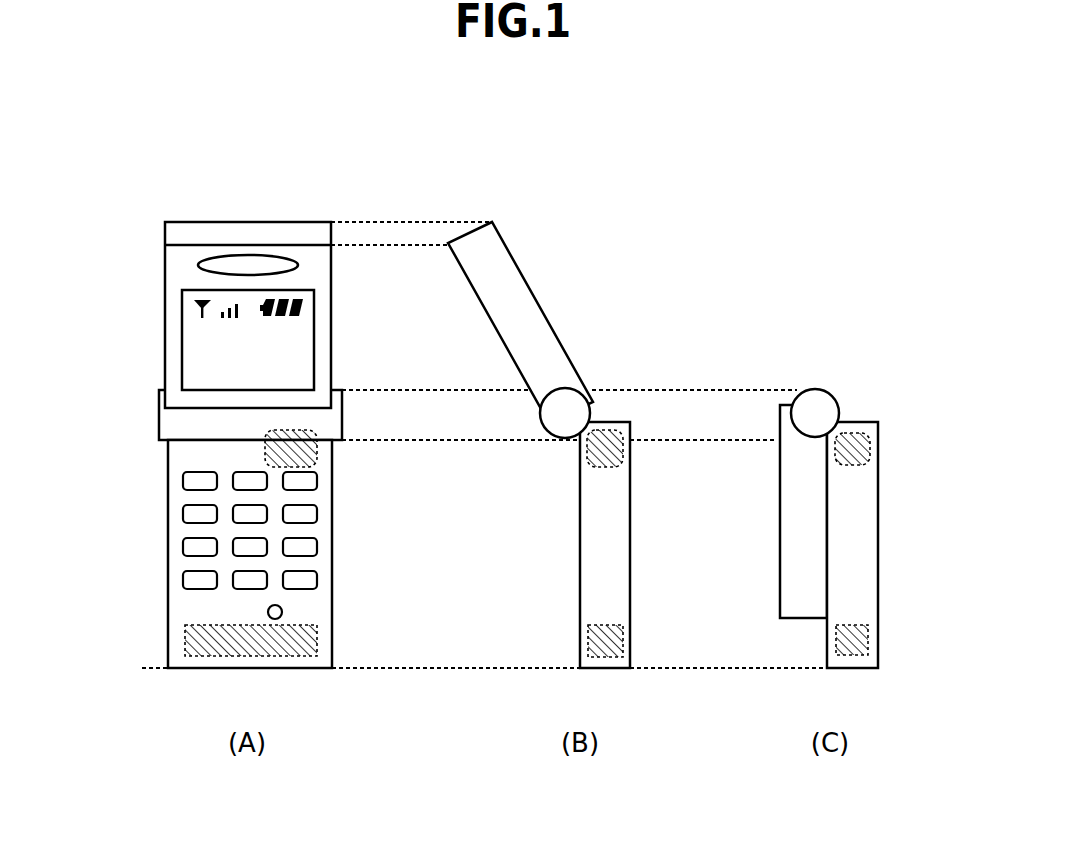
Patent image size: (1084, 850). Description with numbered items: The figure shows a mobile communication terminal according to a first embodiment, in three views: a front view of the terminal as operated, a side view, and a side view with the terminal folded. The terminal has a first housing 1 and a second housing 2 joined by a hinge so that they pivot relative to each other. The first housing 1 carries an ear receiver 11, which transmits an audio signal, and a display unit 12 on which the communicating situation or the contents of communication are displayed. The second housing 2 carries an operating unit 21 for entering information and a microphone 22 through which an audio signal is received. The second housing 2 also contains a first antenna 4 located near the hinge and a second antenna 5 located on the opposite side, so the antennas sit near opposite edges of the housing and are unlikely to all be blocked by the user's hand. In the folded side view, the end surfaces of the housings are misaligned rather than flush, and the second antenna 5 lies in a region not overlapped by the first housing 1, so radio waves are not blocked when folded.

The first housing 1 is at (165, 312).
The second housing 2 is at (168, 472).
The first antenna 4 is at (317, 455).
The second antenna 5 is at (187, 634).
The ear receiver 11 is at (253, 264).
The display unit 12 is at (314, 345).
The operating unit 21 is at (183, 548).
The microphone 22 is at (283, 609).